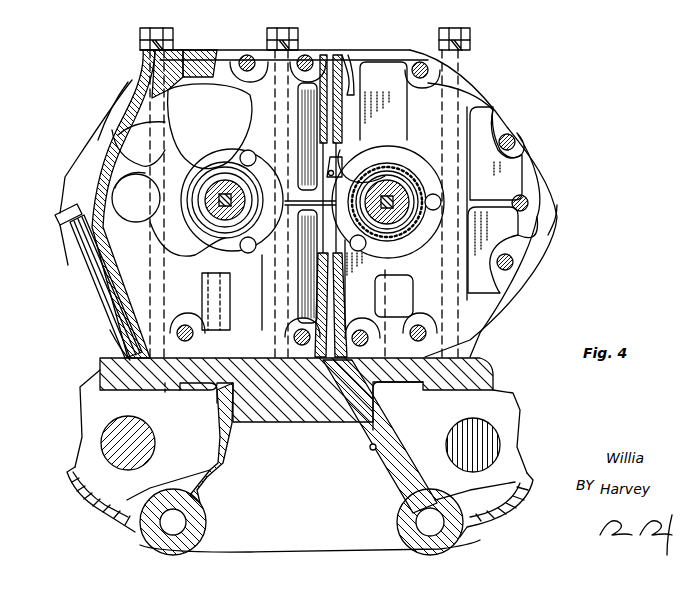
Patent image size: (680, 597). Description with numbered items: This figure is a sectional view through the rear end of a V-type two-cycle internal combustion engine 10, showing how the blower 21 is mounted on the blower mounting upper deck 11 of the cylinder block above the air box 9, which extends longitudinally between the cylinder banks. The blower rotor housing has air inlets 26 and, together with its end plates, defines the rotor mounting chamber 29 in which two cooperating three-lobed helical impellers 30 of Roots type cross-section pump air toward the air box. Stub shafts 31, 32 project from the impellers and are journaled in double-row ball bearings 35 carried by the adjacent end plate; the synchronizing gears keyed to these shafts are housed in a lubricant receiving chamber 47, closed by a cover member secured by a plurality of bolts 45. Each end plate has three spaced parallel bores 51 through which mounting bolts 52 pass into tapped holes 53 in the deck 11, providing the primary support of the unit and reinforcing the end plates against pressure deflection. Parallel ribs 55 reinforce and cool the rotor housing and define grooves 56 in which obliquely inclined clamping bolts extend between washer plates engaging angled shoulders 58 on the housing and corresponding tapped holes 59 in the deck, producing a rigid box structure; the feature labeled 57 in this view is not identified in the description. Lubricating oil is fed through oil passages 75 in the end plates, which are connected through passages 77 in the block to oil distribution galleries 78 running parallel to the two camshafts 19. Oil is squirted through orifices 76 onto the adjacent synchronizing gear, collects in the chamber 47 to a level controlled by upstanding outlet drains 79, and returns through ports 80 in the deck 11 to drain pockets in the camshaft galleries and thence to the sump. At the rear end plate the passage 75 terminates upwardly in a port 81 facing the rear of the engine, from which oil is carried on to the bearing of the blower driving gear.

The air box 9 is at (205, 466).
The internal combustion engine 10 is at (116, 518).
The blower mounting upper deck 11 is at (488, 368).
The camshafts 19 is at (150, 442).
The blower 21 is at (115, 85).
The air inlets 26 is at (213, 50).
The rotor mounting chamber 29 is at (128, 112).
The impellers 30 is at (182, 150).
The stub shaft 31 is at (395, 185).
The stub shaft 32 is at (225, 190).
The double-row ball bearings 35 is at (215, 230).
The bolts 45 is at (247, 55).
The lubricant receiving chamber 47 is at (505, 233).
The bores 51 is at (305, 52).
The mounting bolts 52 is at (140, 35).
The tapped holes 53 is at (132, 393).
The ribs 55 is at (558, 194).
The grooves 56 is at (98, 310).
The pin bore 57 is at (112, 222).
The angled shoulders 58 is at (86, 284).
The tapped holes 59 is at (166, 392).
The oil passages 75 is at (336, 60).
The orifices 76 is at (342, 160).
The passages 77 is at (370, 450).
The oil distribution galleries 78 is at (188, 520).
The outlet drains 79 is at (240, 296).
The ports 80 is at (212, 385).
The port 81 is at (350, 60).